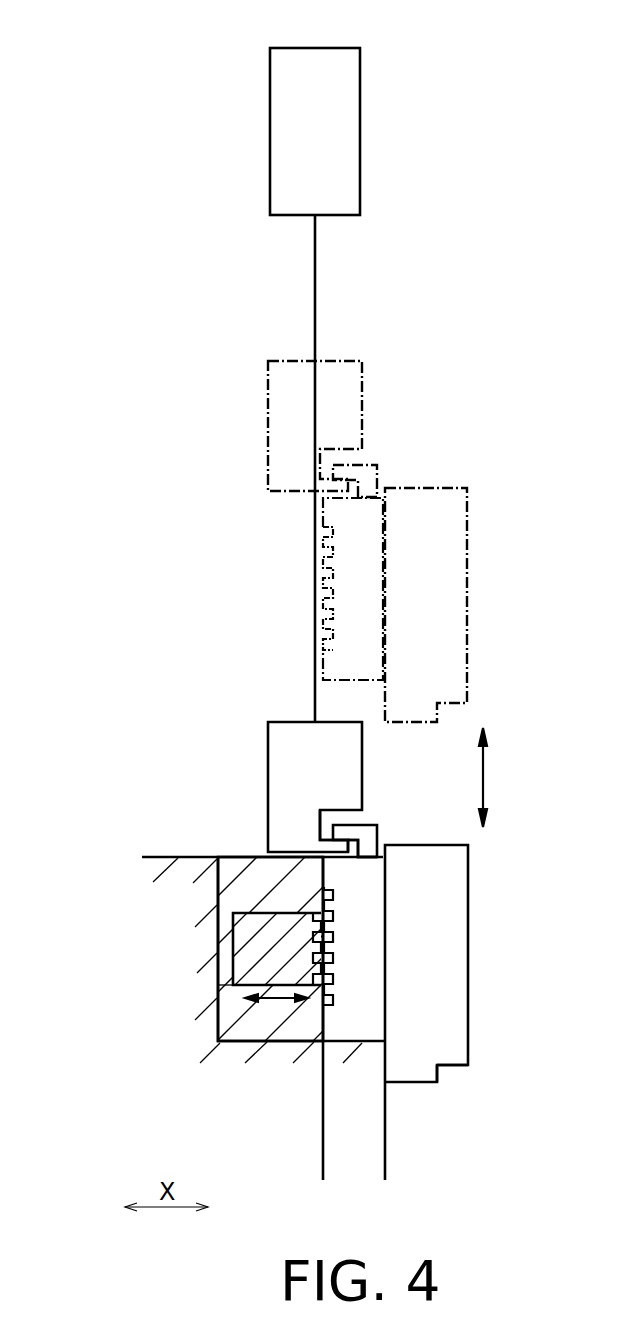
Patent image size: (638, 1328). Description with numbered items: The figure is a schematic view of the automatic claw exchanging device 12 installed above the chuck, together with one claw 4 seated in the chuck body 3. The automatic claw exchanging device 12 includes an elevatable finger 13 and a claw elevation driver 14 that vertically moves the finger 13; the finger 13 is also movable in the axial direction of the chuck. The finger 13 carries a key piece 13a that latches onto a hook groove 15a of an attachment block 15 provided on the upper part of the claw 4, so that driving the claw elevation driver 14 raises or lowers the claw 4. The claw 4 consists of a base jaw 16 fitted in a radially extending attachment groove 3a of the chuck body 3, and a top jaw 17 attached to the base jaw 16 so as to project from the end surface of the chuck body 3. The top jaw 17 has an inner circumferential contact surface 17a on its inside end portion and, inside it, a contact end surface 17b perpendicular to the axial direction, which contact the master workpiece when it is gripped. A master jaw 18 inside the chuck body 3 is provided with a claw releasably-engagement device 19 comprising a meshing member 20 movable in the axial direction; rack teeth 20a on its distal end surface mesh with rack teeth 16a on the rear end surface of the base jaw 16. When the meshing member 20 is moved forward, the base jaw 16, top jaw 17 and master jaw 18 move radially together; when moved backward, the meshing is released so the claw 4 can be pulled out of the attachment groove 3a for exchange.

The automatic claw exchanging device 12 is at (474, 97).
The claw elevation driver 14 is at (290, 133).
The finger 13 is at (278, 404).
The key piece 13a is at (330, 847).
The attachment block 15 is at (370, 472).
The hook groove 15a is at (356, 846).
The base jaw 16 is at (322, 590).
The rack teeth 16a is at (335, 915).
The top jaw 17 is at (452, 583).
The inner circumferential contact surface 17a is at (453, 1066).
The contact end surface 17b is at (445, 1068).
The chuck body 3 is at (156, 857).
The attachment groove 3a is at (340, 1057).
The claw 4 is at (506, 864).
The master jaw 18 is at (250, 1042).
The claw releasably-engagement device 19 is at (230, 988).
The meshing member 20 is at (245, 968).
The rack teeth 20a is at (318, 940).